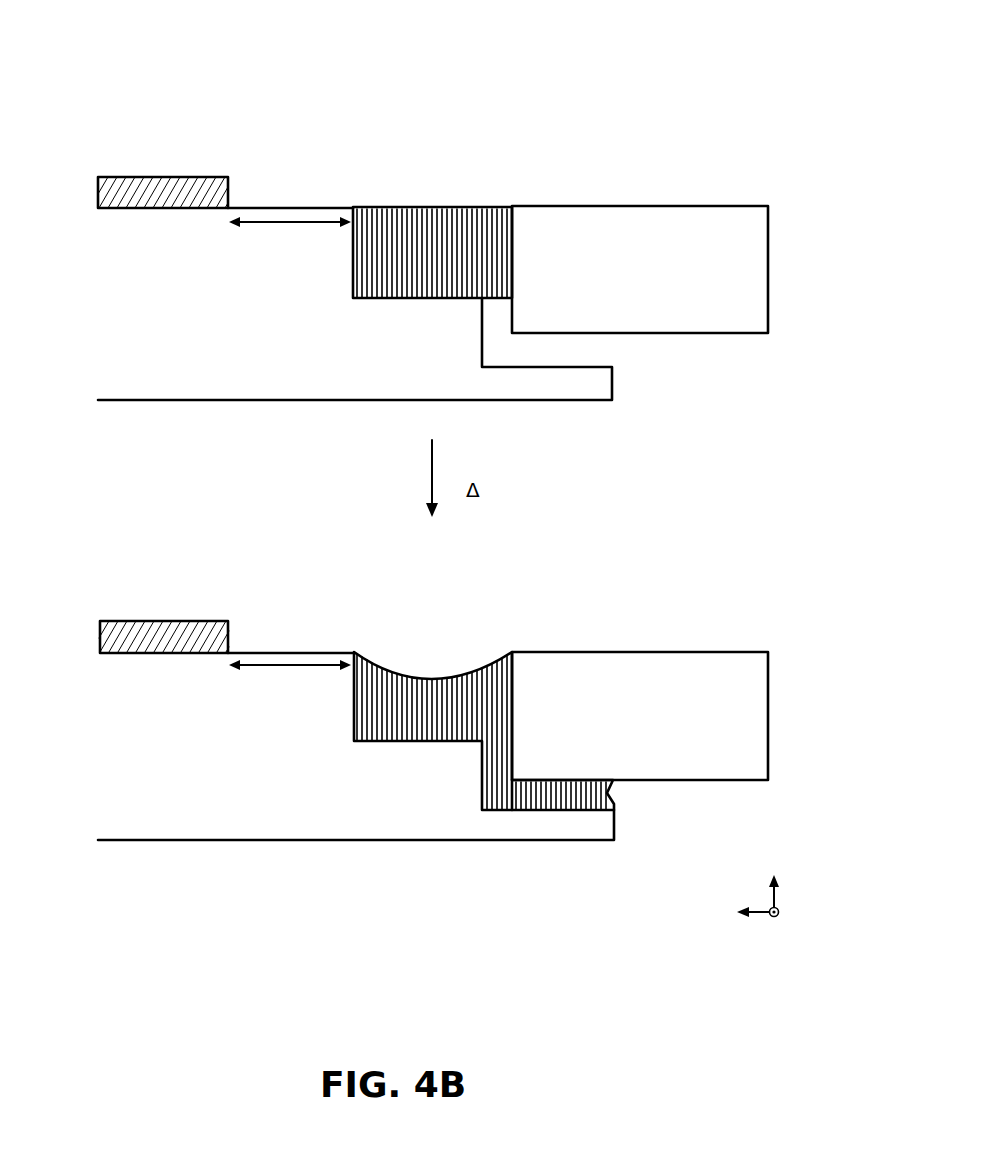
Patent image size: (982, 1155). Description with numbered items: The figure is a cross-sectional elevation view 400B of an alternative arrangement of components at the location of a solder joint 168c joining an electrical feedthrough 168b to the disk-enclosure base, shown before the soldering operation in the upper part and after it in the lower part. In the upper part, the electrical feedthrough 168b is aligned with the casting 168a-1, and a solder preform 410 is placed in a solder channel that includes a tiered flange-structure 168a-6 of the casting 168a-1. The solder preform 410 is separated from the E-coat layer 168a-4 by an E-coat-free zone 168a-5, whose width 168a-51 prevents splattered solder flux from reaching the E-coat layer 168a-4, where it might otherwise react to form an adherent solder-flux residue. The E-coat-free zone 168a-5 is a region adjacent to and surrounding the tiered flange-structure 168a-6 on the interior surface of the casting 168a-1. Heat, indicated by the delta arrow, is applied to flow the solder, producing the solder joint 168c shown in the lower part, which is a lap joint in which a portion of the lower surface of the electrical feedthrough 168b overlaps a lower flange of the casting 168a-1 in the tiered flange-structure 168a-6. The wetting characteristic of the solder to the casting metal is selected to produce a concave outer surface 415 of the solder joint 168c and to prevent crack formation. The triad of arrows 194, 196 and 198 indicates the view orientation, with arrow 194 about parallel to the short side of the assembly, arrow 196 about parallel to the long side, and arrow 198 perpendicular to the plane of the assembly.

The cross-sectional elevation view 400B is at (113, 78).
The E-coat layer 168a-4 is at (165, 195).
The E-coat-free zone 168a-5 is at (292, 208).
The width of the E-coat-free zone 168a-51 is at (290, 223).
The solder preform 410 is at (486, 228).
The electrical feedthrough 168b is at (632, 262).
The casting 168a-1 is at (196, 345).
The tiered flange-structure 168a-6 is at (540, 367).
The concave outer surface 415 is at (422, 678).
The solder joint 168c is at (468, 695).
The arrow 194 is at (767, 916).
The arrow 196 is at (778, 918).
The arrow 198 is at (776, 899).